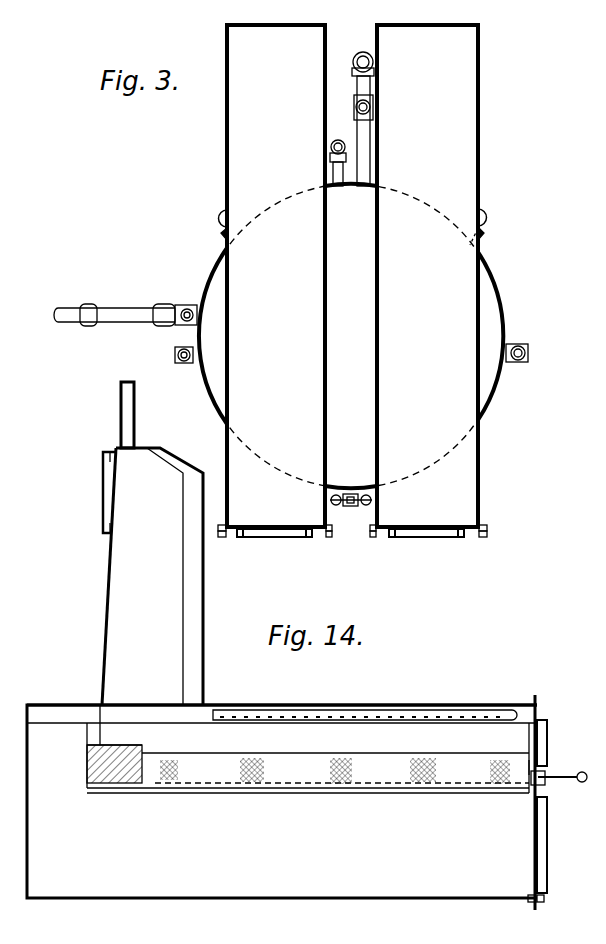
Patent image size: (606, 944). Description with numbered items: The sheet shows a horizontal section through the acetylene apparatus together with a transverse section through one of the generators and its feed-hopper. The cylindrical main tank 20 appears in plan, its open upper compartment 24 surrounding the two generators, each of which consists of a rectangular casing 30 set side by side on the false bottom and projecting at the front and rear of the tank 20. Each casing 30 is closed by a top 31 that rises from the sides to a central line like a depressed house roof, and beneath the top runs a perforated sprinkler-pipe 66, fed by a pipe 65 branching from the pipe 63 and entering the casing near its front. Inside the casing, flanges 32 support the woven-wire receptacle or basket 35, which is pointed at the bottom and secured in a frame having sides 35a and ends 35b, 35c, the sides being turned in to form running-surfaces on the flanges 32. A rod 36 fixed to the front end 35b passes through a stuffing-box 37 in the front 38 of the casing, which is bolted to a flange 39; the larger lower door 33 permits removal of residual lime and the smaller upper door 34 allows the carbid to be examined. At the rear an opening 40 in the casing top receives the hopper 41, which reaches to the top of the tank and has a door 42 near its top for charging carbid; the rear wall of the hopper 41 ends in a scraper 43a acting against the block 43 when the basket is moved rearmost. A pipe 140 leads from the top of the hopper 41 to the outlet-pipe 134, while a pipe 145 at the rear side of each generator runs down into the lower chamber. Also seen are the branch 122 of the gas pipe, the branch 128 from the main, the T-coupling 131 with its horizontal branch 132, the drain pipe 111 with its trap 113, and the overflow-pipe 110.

In FIG. 3, the main tank 20 is at (505, 302).
In FIG. 3, the upper compartment 24 is at (212, 333).
In FIG. 3, the rectangular casing 30 is at (352, 276).
In FIG. 14, the rectangular casing 30 is at (282, 802).
In FIG. 14, the top 31 is at (337, 710).
In FIG. 14, the flanges 32 is at (210, 793).
In FIG. 3, the larger or lower door 33 is at (270, 537).
In FIG. 14, the larger or lower door 33 is at (547, 838).
In FIG. 14, the smaller or upper door 34 is at (547, 741).
In FIG. 14, the receptacle or basket 35 is at (335, 759).
In FIG. 14, the sides 35a is at (335, 760).
In FIG. 14, the front end 35b is at (529, 765).
In FIG. 14, the end 35c is at (87, 755).
In FIG. 14, the rod 36 is at (560, 773).
In FIG. 14, the stuffing-box 37 is at (545, 783).
In FIG. 3, the front 38 is at (338, 516).
In FIG. 14, the front 38 is at (530, 902).
In FIG. 3, the flange 39 is at (330, 537).
In FIG. 14, the flange 39 is at (544, 899).
In FIG. 14, the opening 40 is at (282, 696).
In FIG. 3, the hopper 41 is at (152, 576).
In FIG. 3, the door 42 is at (103, 490).
In FIG. 14, the step or block 43 is at (150, 740).
In FIG. 14, the scraper 43a is at (100, 745).
In FIG. 3, the pipe 63 is at (351, 494).
In FIG. 3, the pipes 65 is at (330, 498).
In FIG. 14, the perforated sprinkler-pipe 66 is at (420, 712).
In FIG. 3, the overflow-pipe 110 is at (184, 307).
In FIG. 3, the pipe 111 is at (84, 318).
In FIG. 3, the trap 113 is at (130, 300).
In FIG. 3, the branch 122 is at (182, 363).
In FIG. 3, the branch 128 is at (334, 166).
In FIG. 3, the T-coupling 131 is at (373, 103).
In FIG. 3, the horizontal branch 132 is at (370, 142).
In FIG. 3, the outlet-pipe 134 is at (373, 60).
In FIG. 3, the pipe 140 is at (134, 418).
In FIG. 3, the pipe 145 is at (211, 220).